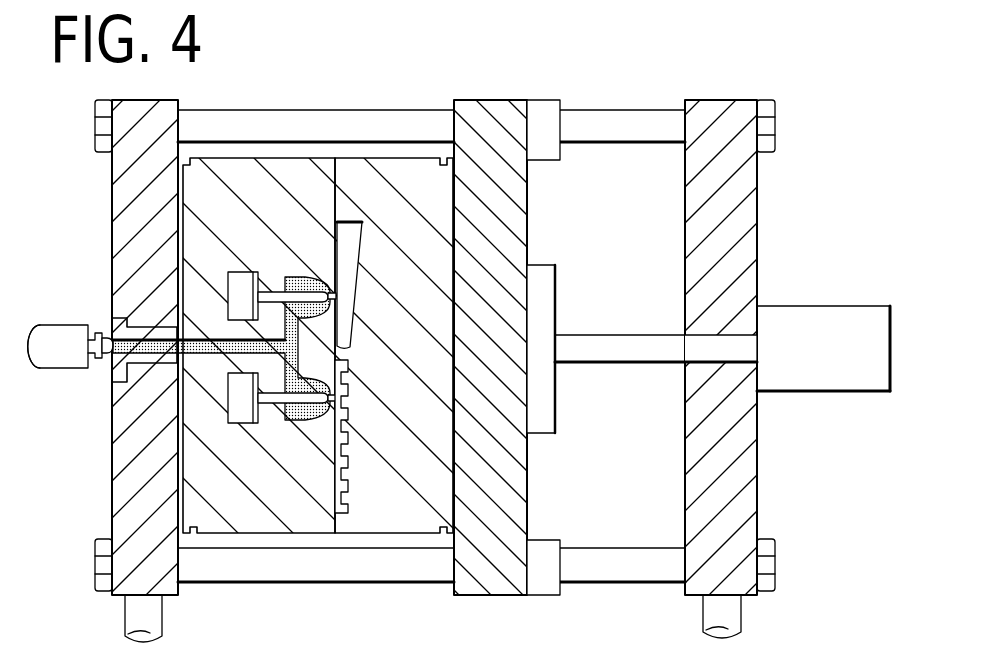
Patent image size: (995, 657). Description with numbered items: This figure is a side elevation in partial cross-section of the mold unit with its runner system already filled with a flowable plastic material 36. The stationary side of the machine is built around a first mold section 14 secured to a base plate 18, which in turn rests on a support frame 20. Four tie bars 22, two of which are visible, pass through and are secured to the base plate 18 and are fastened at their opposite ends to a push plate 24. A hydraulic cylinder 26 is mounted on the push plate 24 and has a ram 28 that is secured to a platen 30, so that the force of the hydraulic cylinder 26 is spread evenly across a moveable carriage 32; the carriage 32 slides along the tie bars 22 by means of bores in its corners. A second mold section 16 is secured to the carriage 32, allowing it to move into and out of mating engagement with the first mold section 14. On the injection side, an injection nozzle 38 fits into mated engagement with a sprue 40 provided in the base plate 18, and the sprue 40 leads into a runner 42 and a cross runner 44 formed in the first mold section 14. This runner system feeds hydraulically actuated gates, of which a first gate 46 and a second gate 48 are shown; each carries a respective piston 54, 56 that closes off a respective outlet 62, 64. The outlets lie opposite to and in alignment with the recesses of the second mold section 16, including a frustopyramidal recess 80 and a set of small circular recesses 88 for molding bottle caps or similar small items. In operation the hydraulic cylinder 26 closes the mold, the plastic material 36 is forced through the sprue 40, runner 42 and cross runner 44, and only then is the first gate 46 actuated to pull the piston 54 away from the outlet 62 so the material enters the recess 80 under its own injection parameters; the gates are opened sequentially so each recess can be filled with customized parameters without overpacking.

The first mold section 14 is at (285, 172).
The second mold section 16 is at (360, 168).
The base plate 18 is at (148, 108).
The support frame 20 is at (733, 618).
The tie bars 22 is at (233, 124).
The push plate 24 is at (718, 108).
The hydraulic cylinder 26 is at (808, 322).
The ram 28 is at (640, 342).
The platen 30 is at (548, 290).
The moveable carriage 32 is at (496, 114).
The flowable plastic material 36 is at (143, 350).
The injection nozzle 38 is at (56, 354).
The sprue 40 is at (118, 364).
The runner 42 is at (216, 358).
The cross runner 44 is at (300, 350).
The first gate 46 is at (240, 274).
The gate 48 is at (243, 424).
The piston 54 is at (276, 296).
The piston 56 is at (290, 420).
The outlet 62 is at (338, 296).
The outlet 64 is at (340, 398).
The frustopyramidal recess 80 is at (352, 222).
The set of small circular recesses 88 is at (350, 446).